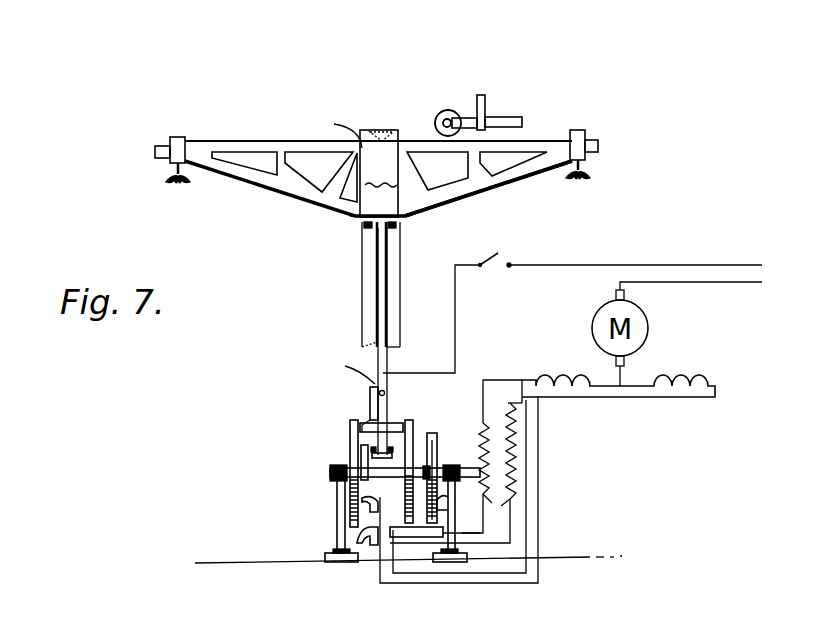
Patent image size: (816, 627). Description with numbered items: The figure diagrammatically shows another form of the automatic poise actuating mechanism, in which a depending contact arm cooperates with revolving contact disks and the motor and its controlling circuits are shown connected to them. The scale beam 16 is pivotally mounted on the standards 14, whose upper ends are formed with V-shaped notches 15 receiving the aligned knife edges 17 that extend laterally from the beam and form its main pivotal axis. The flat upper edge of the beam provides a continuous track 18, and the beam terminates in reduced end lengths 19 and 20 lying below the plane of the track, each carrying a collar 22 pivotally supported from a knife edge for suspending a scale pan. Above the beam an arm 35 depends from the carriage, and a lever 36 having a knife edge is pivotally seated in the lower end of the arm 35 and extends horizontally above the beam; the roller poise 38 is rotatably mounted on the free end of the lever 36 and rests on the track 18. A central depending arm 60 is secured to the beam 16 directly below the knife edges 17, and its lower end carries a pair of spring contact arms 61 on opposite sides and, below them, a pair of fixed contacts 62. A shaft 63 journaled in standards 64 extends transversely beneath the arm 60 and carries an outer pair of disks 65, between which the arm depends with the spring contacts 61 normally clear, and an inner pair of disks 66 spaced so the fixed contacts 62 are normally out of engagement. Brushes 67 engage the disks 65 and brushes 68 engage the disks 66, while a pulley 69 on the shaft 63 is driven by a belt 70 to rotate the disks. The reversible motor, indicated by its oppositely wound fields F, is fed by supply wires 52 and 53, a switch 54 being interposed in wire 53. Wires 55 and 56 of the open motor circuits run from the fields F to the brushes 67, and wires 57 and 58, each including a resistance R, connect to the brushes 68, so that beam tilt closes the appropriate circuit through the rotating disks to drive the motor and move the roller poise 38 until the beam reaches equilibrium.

The standard 14 is at (400, 250).
The notch 15 is at (335, 128).
The scale beam 16 is at (480, 178).
The knife edge 17 is at (381, 129).
The track 18 is at (412, 141).
The reduced end length 19 is at (163, 150).
The reduced end length 20 is at (599, 146).
The collar 22 is at (181, 142).
The arm 35 is at (486, 101).
The lever 36 is at (520, 119).
The roller poise 38 is at (451, 110).
The supply wire 52 is at (701, 283).
The supply wire 53 is at (691, 265).
The switch 54 is at (505, 257).
The wire 55 is at (540, 419).
The wire 56 is at (500, 574).
The wire 57 is at (643, 398).
The wire 58 is at (497, 380).
The central depending arm 60 is at (384, 365).
The spring contact arm 61 is at (378, 414).
The fixed contact 62 is at (365, 453).
The shaft 63 is at (430, 446).
The standard 64 is at (337, 522).
The disk 65 is at (349, 424).
The disk 66 is at (361, 451).
The brush 67 is at (360, 532).
The brush 68 is at (364, 503).
The pulley 69 is at (446, 499).
The belt 70 is at (440, 452).
The field F is at (679, 374).
The resistance R is at (453, 473).